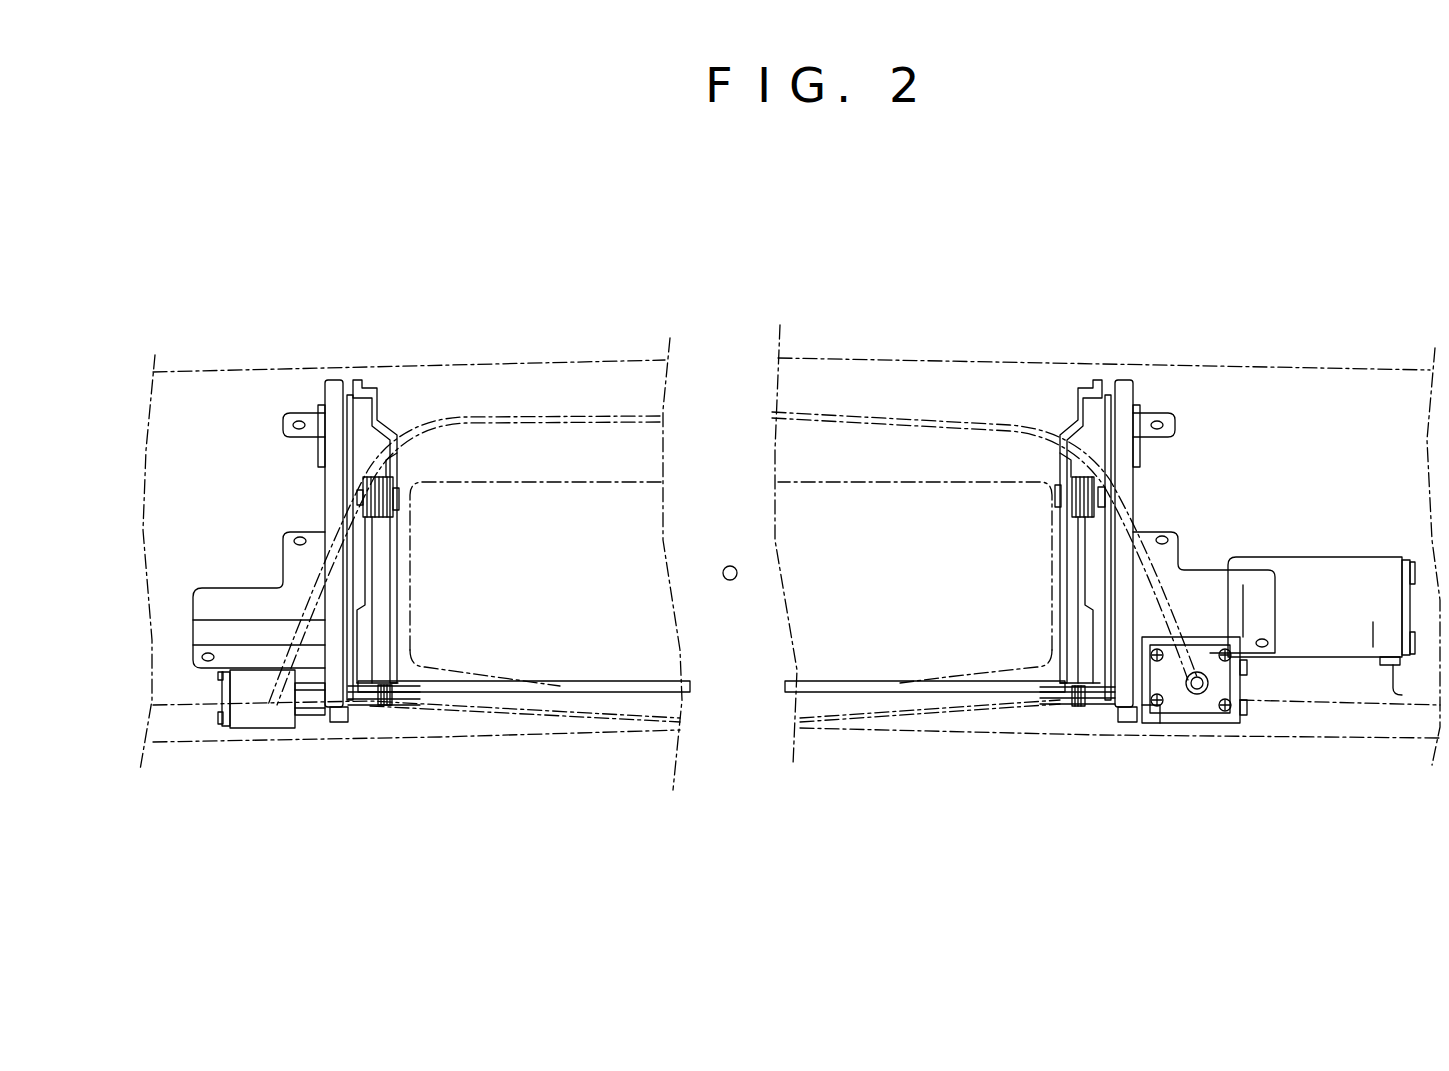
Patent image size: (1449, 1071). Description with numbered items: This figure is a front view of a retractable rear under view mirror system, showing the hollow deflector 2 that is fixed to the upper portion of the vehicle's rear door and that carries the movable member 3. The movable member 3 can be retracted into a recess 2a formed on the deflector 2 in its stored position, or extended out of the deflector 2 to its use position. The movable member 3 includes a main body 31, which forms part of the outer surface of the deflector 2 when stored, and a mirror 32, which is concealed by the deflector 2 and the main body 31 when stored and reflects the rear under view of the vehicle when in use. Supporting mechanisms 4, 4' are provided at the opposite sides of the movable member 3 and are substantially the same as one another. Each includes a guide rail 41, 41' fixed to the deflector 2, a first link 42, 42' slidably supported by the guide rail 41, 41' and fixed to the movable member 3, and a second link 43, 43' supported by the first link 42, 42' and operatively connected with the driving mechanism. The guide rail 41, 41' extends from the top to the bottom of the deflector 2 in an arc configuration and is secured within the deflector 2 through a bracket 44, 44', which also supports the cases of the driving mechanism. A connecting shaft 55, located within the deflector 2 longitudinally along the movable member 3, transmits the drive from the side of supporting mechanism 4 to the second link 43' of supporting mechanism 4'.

The deflector 2 is at (1297, 362).
The recess 2a is at (812, 420).
The movable member 3 is at (560, 413).
The main body 31 is at (898, 440).
The mirror 32 is at (882, 650).
The supporting mechanism 4 is at (1227, 552).
The supporting mechanism 4' is at (317, 551).
The guide rail 41 is at (1167, 508).
The guide rail 41' is at (330, 506).
The first link 42 is at (1076, 492).
The first link 42' is at (397, 495).
The second link 43 is at (1089, 737).
The second link 43' is at (375, 737).
The bracket 44 is at (1204, 522).
The bracket 44' is at (259, 565).
The connecting shaft 55 is at (670, 690).